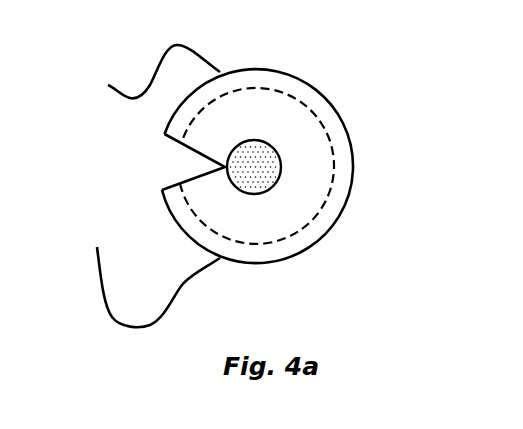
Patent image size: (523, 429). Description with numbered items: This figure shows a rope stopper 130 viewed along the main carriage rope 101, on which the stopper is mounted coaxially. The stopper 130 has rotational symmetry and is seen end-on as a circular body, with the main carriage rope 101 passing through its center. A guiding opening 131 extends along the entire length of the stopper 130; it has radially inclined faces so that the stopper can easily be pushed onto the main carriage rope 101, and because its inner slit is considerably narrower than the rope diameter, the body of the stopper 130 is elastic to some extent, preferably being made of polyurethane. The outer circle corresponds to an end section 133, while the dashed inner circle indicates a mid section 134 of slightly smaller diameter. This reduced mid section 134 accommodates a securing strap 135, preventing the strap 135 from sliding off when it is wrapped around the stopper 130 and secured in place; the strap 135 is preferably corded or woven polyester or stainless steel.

The main carriage rope 101 is at (239, 150).
The rope stopper 130 is at (243, 173).
The guiding opening 131 is at (172, 185).
The end section 133 is at (310, 247).
The mid section 134 is at (290, 100).
The strap 135 is at (172, 44).